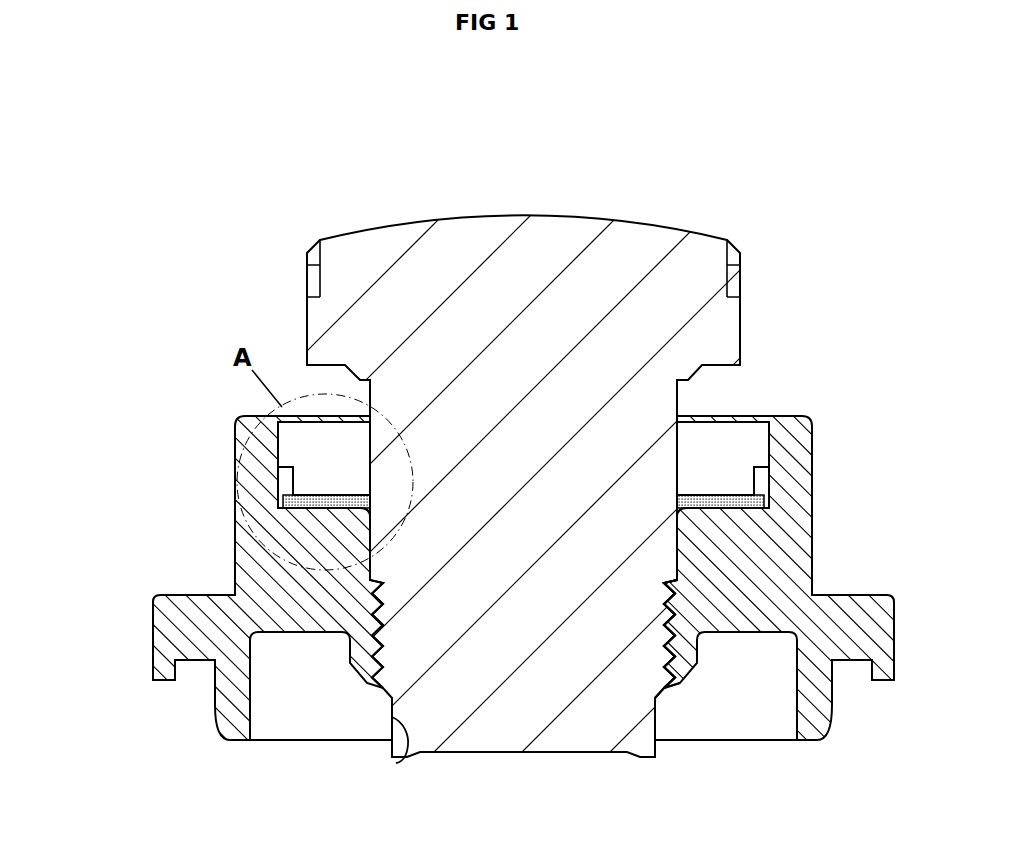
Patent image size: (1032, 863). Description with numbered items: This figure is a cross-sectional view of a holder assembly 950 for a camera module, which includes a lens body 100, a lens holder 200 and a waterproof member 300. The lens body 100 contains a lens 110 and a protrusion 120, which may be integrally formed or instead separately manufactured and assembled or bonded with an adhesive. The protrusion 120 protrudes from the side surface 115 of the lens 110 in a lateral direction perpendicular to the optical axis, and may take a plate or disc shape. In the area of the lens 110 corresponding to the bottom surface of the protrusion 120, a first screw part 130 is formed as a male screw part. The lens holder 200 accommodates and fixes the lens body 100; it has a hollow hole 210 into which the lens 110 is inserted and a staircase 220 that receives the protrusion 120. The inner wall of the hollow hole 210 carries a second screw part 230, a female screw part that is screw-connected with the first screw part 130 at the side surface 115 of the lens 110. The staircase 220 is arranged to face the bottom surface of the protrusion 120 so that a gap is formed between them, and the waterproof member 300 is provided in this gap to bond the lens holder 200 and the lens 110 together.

The lens body 100 is at (556, 205).
The lens 110 is at (438, 270).
The side surface 115 is at (677, 399).
The protrusion 120 is at (742, 477).
The first screw part 130 is at (667, 636).
The lens holder 200 is at (211, 564).
The hollow hole 210 is at (400, 767).
The staircase 220 is at (763, 494).
The second screw part 230 is at (670, 668).
The waterproof member 300 is at (283, 497).
The holder assembly 950 is at (767, 176).